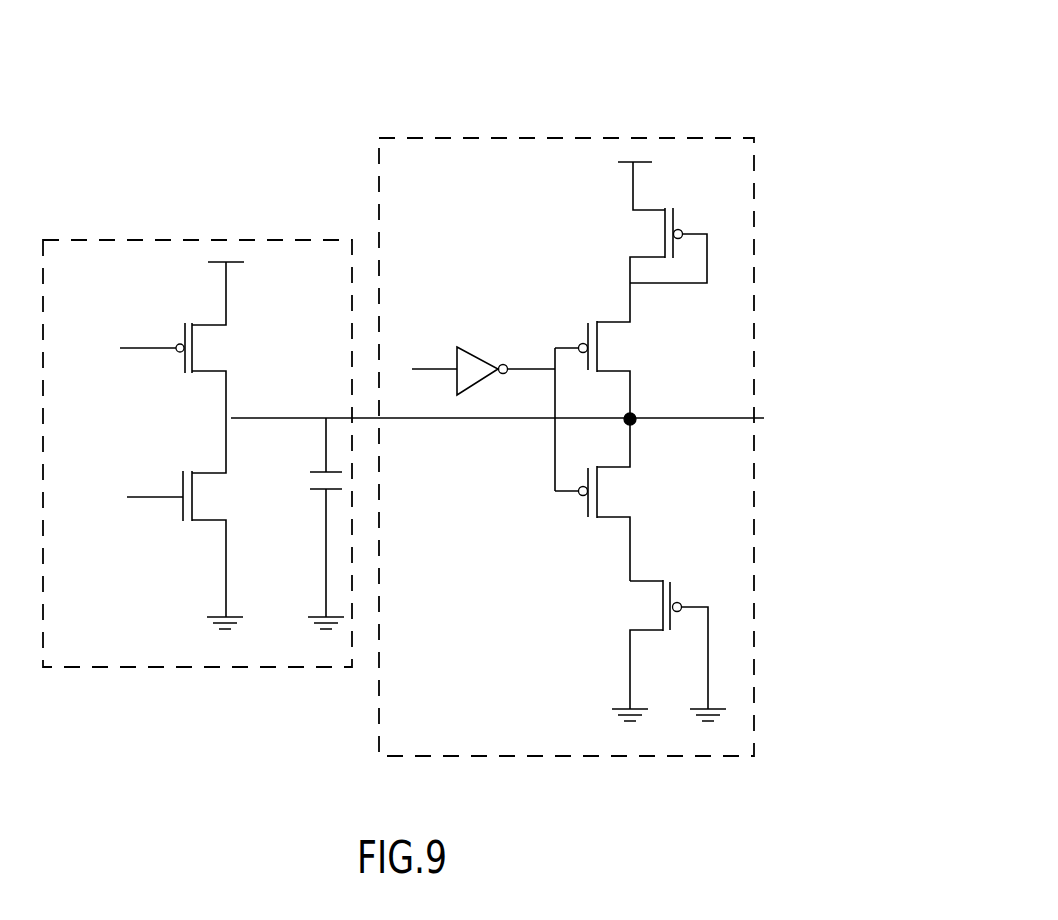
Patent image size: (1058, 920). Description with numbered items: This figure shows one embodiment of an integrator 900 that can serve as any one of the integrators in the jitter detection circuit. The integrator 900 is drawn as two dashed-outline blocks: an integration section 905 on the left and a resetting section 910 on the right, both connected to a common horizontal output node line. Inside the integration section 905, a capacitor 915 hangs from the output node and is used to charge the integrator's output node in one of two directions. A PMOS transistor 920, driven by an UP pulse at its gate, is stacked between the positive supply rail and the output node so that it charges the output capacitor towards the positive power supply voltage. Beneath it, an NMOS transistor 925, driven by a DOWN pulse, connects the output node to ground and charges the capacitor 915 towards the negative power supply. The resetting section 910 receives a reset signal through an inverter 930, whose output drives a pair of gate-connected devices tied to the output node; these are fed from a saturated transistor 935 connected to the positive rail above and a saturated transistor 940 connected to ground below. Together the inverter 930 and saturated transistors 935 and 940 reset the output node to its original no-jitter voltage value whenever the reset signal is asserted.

The integrator 900 is at (478, 114).
The integration section 905 is at (171, 241).
The resetting section 910 is at (660, 138).
The capacitor 915 is at (320, 490).
The PMOS transistor 920 is at (183, 337).
The NMOS transistor 925 is at (202, 523).
The inverter 930 is at (477, 352).
The saturated transistor 935 is at (675, 222).
The saturated transistor 940 is at (672, 595).